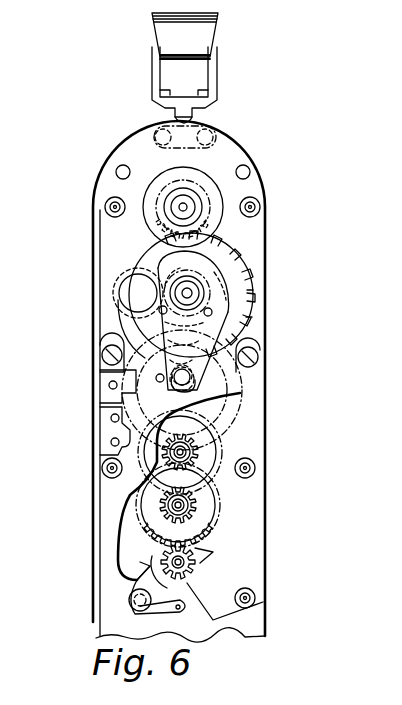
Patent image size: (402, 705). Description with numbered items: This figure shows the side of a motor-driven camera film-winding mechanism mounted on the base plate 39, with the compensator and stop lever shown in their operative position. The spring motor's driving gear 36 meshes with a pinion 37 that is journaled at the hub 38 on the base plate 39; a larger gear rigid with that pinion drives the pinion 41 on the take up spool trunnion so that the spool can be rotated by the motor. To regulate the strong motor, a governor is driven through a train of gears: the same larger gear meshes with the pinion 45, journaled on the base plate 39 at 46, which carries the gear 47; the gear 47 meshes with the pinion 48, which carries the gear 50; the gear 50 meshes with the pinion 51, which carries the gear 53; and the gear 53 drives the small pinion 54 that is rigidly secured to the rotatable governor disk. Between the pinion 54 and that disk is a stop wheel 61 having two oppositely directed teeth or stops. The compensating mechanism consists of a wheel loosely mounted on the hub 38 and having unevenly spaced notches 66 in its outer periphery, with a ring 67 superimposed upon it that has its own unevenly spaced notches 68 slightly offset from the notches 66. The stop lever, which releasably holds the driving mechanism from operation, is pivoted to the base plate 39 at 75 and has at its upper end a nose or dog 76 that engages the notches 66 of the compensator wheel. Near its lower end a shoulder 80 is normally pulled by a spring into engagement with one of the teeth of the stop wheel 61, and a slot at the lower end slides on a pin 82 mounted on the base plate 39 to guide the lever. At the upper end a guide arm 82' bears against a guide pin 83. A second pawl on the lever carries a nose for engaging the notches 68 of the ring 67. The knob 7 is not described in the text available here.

The setting knob 7 is at (203, 35).
The pinion 41 is at (203, 190).
The ring 67 is at (207, 257).
The pinion 37 is at (197, 273).
The hub 38 is at (190, 292).
The notches 66 is at (250, 290).
The notches 68 is at (250, 317).
The guide pin 83 is at (237, 360).
The guide arm 82' is at (248, 369).
The journal 46 is at (197, 387).
The pinion 45 is at (220, 400).
The gear 47 is at (227, 412).
The pinion 48 is at (193, 452).
The gear 50 is at (210, 475).
The gear 53 is at (220, 500).
The pinion 51 is at (193, 512).
The base plate 39 is at (223, 553).
The pinion 54 is at (197, 563).
The wheel 61 is at (257, 610).
The driving gear 36 is at (113, 287).
The pivot 75 is at (103, 352).
The nose 76 is at (157, 378).
The shoulder 80 is at (147, 563).
The pin 82 is at (109, 598).